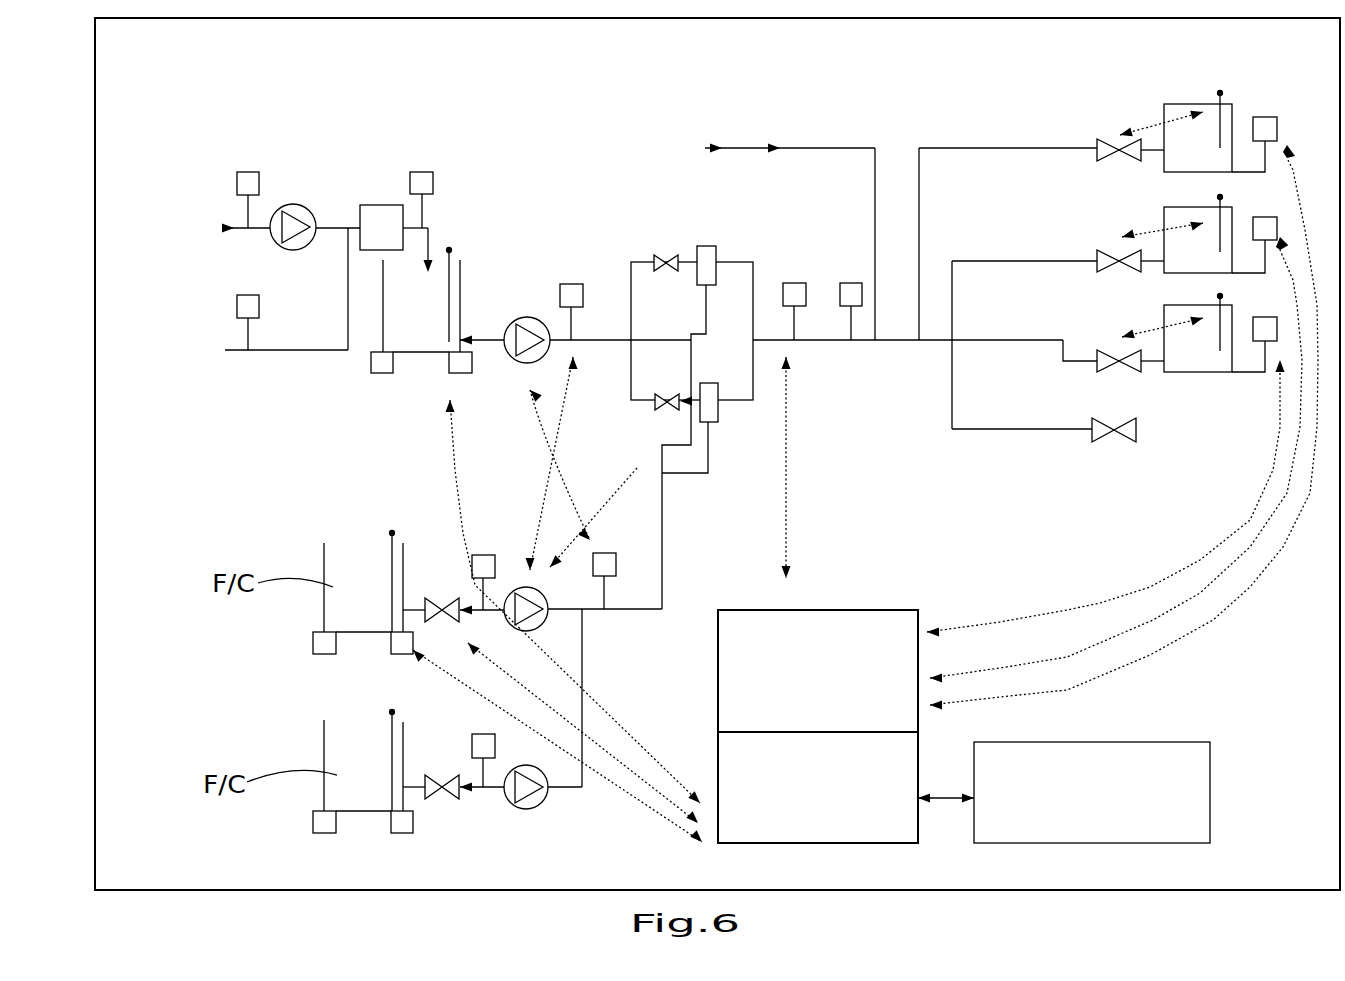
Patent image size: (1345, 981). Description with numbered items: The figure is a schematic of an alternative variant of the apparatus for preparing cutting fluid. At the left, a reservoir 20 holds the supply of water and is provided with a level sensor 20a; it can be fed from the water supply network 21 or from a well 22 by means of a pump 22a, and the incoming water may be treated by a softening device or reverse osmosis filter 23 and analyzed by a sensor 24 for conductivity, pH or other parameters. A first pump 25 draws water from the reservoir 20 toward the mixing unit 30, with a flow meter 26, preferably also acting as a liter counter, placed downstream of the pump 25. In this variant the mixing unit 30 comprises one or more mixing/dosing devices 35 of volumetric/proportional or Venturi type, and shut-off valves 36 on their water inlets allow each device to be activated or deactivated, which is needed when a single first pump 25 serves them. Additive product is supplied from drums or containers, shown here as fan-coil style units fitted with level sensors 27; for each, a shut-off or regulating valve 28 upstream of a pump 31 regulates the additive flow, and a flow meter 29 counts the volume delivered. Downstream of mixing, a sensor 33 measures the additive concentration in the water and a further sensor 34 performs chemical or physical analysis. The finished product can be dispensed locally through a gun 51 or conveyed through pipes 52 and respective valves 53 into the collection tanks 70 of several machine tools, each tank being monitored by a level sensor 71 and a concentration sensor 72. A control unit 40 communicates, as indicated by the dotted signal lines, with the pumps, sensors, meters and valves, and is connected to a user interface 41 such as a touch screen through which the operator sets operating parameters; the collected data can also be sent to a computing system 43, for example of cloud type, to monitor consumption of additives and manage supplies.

The reservoir 20 is at (422, 310).
The level sensor 20a is at (449, 250).
The water supply network 21 is at (250, 305).
The well 22 is at (248, 185).
The pump 22a is at (293, 214).
The reverse osmosis filter 23 is at (382, 232).
The sensor 24 is at (421, 185).
The first pump 25 is at (527, 330).
The flow meter 26 is at (573, 285).
The level sensors 27 is at (392, 533).
The shut-off valve 28 is at (448, 607).
The flow meter 29 is at (485, 557).
The mixing unit 30 is at (752, 393).
The pump 31 is at (533, 620).
The sensor 33 is at (818, 277).
The further sensor 34 is at (873, 280).
The mixing/dosing devices 35 is at (708, 247).
The shut-off valves 36 is at (677, 258).
The control unit 40 is at (818, 787).
The user interface 41 is at (818, 671).
The computing system 43 is at (1064, 792).
The gun 51 is at (1102, 432).
The pipes 52 is at (990, 148).
The valves 53 is at (1110, 148).
The collection tanks 70 is at (1173, 110).
The level sensor 71 is at (1220, 93).
The concentration sensor 72 is at (1267, 127).